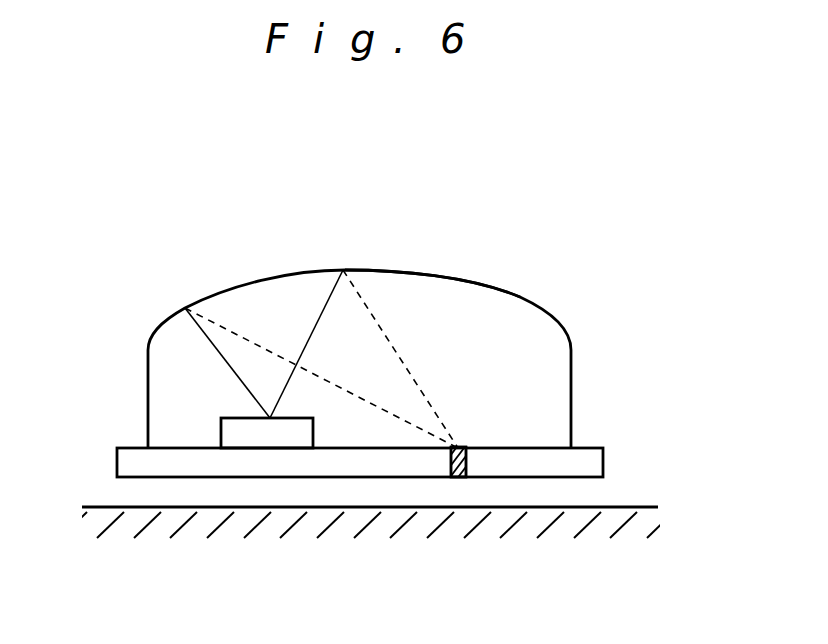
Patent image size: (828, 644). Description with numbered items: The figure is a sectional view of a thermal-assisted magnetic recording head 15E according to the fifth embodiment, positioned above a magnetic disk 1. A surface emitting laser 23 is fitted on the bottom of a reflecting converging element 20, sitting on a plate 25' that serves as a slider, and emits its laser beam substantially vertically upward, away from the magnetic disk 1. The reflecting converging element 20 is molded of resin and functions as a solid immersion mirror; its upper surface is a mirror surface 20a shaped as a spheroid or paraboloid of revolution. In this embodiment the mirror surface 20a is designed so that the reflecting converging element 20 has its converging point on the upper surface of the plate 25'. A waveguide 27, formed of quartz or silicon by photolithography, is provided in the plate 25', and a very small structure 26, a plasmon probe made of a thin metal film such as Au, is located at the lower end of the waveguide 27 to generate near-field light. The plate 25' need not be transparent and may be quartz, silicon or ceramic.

The magnetic disk 1 is at (633, 507).
The thermal-assisted magnetic recording head 15E is at (282, 228).
The reflecting converging element 20 is at (162, 322).
The mirror surface 20a is at (443, 277).
The surface emitting laser 23 is at (235, 418).
The plate 25' is at (411, 442).
The very small structure (plasmon probe) 26 is at (458, 478).
The waveguide 27 is at (467, 462).